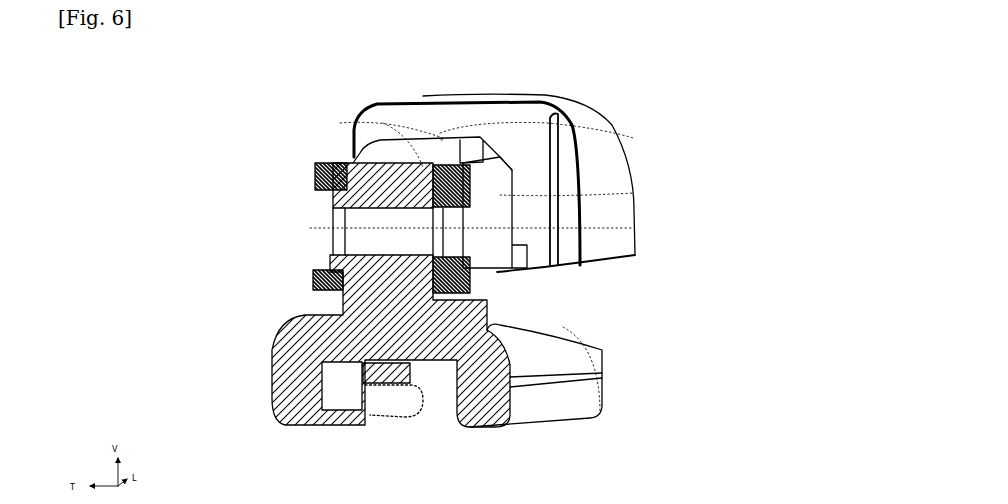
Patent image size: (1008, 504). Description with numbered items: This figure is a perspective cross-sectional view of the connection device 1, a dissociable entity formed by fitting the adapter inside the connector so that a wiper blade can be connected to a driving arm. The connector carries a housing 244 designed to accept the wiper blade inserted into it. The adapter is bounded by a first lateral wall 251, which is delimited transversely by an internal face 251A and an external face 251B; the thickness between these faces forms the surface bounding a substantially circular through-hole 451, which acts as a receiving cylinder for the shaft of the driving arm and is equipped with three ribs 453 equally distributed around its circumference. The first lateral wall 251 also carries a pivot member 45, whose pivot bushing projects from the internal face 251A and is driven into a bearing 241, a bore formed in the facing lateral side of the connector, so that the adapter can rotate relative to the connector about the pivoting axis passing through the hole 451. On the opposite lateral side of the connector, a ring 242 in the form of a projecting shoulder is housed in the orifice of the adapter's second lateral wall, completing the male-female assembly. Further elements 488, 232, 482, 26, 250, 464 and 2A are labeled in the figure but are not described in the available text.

The connection device 1 is at (130, 122).
The cover lip 488 is at (354, 123).
The bearing 241 is at (355, 152).
The elastic member 232 is at (315, 175).
The ring 242 is at (327, 200).
The lower elastic member 482 is at (333, 240).
The base body 26 is at (293, 275).
The housing 250 is at (563, 103).
The first lateral wall 251 is at (590, 145).
The through-hole 451 is at (555, 205).
The external face 251B is at (560, 230).
The flange 464 is at (527, 288).
The ribs 453 is at (500, 310).
The pivot member 45 is at (540, 327).
The internal face 251A is at (603, 350).
The mounting surface 2A is at (624, 365).
The housing 244 is at (433, 422).